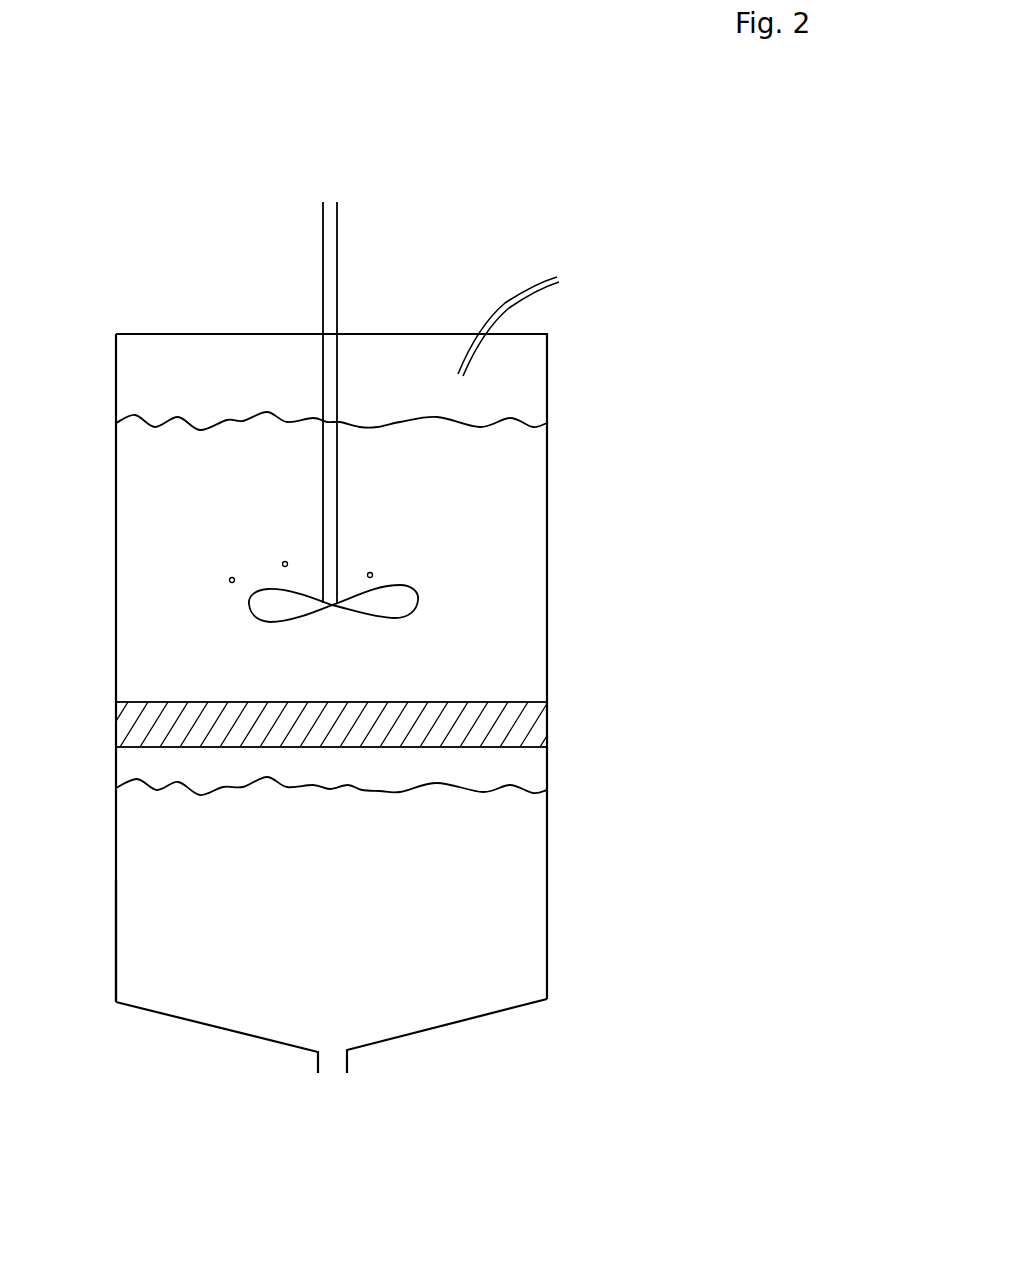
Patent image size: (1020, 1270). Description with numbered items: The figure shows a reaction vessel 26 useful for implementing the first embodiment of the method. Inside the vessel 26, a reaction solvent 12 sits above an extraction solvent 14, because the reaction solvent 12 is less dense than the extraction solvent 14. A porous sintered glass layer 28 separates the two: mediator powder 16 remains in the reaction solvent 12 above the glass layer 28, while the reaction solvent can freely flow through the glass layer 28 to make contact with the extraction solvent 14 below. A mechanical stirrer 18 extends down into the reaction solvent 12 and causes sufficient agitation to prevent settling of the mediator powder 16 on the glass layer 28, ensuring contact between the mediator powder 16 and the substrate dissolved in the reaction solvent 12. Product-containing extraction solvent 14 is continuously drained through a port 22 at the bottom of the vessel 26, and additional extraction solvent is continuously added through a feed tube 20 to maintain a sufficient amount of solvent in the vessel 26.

The reaction solvent 12 is at (518, 603).
The extraction solvent 14 is at (468, 885).
The mediator powder 16 is at (426, 563).
The mechanical stirrer 18 is at (329, 196).
The feed tube 20 is at (563, 275).
The port 22 is at (355, 1060).
The reaction vessel 26 is at (116, 906).
The porous sintered glass layer 28 is at (523, 712).